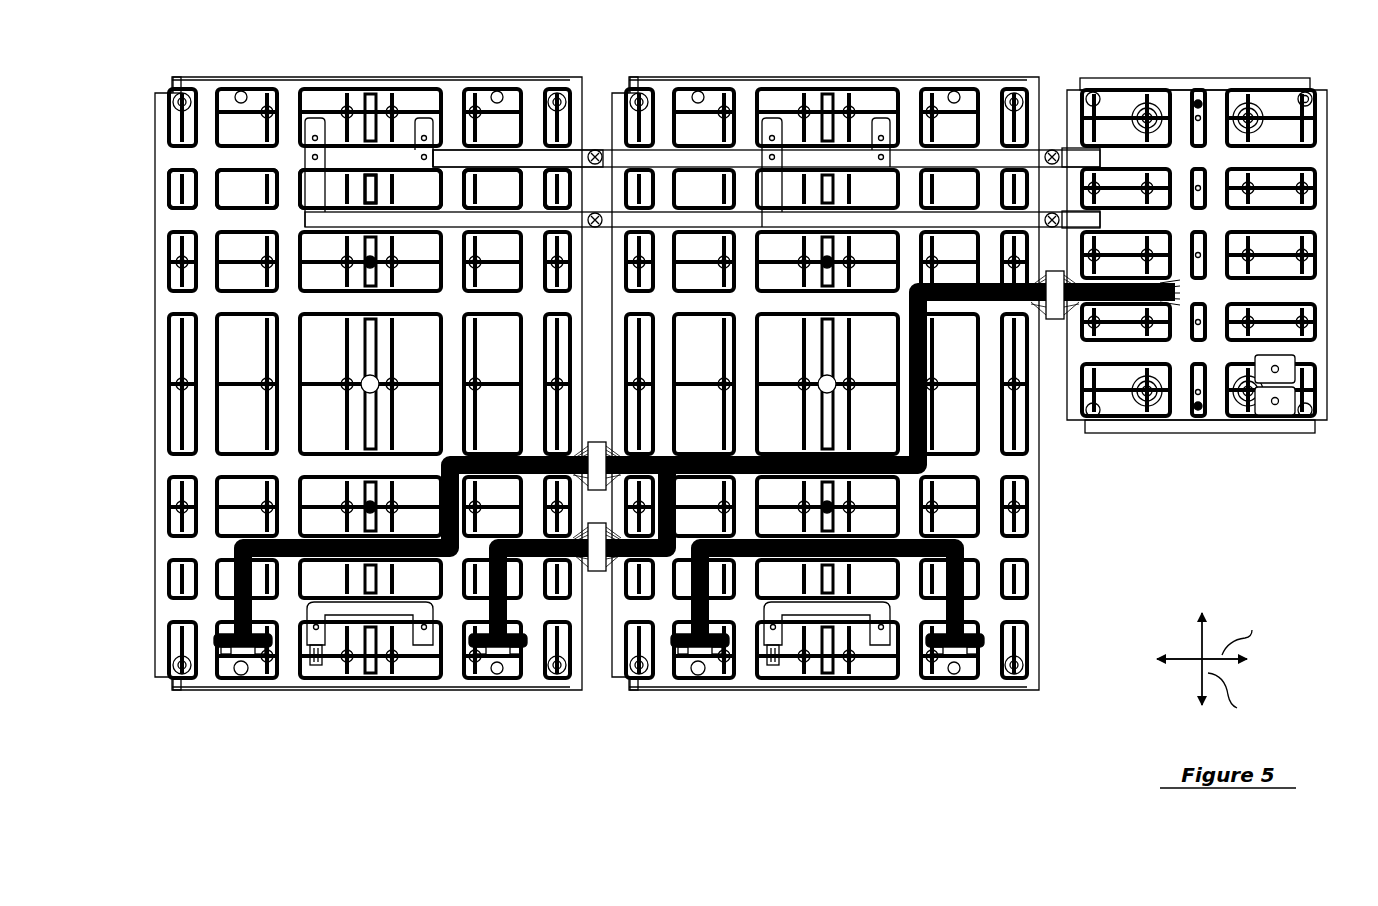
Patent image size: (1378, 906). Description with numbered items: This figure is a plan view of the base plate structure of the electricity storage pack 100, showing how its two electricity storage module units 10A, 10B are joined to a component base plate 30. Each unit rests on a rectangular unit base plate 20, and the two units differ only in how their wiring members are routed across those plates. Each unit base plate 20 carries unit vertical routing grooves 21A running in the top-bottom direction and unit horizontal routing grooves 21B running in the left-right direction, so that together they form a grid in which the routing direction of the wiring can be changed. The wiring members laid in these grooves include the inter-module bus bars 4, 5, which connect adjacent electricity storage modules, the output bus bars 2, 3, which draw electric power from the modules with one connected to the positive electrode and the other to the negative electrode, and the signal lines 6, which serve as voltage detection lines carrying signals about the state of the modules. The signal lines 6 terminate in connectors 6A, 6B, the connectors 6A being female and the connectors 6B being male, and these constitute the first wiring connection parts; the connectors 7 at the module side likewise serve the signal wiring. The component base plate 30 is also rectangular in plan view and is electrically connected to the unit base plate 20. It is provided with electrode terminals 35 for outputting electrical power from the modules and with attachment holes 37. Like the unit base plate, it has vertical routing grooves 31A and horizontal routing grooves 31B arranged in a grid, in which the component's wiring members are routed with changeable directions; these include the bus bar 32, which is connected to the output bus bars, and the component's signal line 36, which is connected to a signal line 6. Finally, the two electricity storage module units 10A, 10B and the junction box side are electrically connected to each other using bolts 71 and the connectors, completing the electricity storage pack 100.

The electricity storage pack 100 is at (686, 26).
The electricity storage module unit 10A is at (425, 52).
The electricity storage module unit 10B is at (845, 55).
The unit vertical routing grooves 21A is at (207, 102).
The unit horizontal routing grooves 21B is at (197, 158).
The output bus bar 3 is at (388, 222).
The inter-module bus bar 4 is at (535, 165).
The output bus bar 2 is at (990, 165).
The bus bar 32 is at (1068, 150).
The bolts 71 is at (595, 150).
The component base plate 30 is at (1217, 256).
The vertical routing grooves 31A is at (1181, 102).
The horizontal routing grooves 31B is at (1268, 158).
The attachment holes 37 is at (1309, 93).
The component's signal line 36 is at (1120, 303).
The electrode terminals 35 is at (1283, 380).
The signal lines 6 is at (960, 548).
The connectors 6A is at (1054, 327).
The connectors 6B is at (597, 440).
The voltage detection connector 7 is at (252, 648).
The inter-module bus bar 5 is at (357, 612).
The unit base plate 20 is at (415, 690).